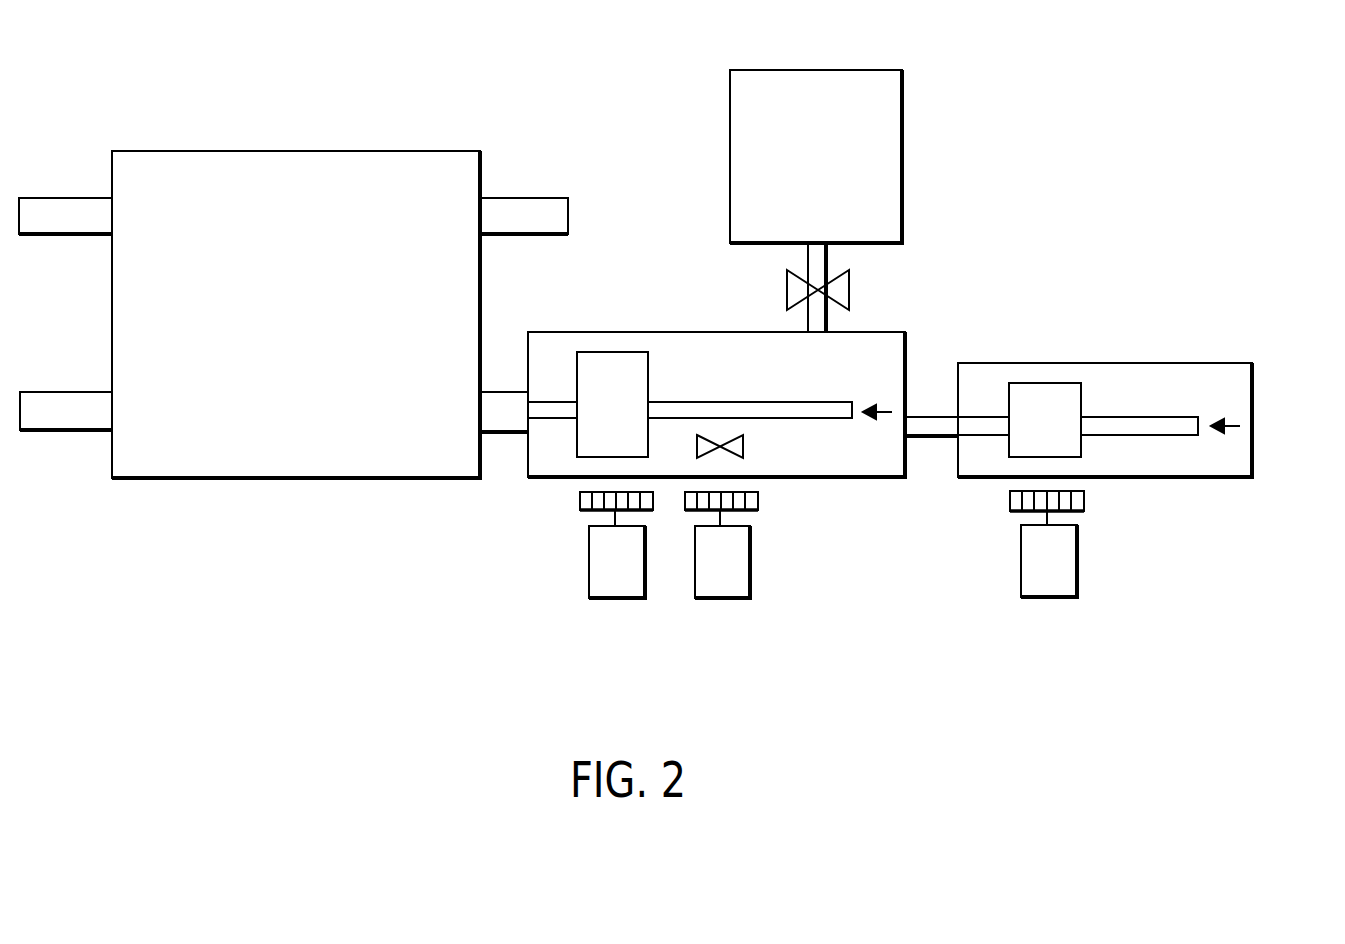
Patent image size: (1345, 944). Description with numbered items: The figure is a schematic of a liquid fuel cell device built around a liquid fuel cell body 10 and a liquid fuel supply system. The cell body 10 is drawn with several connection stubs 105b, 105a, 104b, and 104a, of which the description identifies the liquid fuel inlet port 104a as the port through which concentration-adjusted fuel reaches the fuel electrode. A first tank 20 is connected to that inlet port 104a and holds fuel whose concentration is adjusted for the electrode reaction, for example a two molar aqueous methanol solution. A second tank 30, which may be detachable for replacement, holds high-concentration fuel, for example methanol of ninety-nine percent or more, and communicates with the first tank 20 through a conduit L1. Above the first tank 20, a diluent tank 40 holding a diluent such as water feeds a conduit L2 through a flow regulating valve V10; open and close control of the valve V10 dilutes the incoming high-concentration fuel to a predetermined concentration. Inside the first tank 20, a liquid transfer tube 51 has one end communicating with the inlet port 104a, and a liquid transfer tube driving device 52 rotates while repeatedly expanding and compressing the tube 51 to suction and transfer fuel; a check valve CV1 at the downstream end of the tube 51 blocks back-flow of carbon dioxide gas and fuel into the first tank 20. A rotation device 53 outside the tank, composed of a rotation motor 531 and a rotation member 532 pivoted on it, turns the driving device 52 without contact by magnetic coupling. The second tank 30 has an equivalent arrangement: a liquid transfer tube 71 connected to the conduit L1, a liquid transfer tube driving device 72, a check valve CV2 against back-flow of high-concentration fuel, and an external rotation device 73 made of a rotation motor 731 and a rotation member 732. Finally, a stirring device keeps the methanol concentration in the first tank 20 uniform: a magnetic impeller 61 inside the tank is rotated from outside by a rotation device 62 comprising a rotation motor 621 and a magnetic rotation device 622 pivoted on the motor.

The liquid fuel cell body 10 is at (215, 151).
The gas port 105b is at (62, 197).
The gas port 105a is at (523, 197).
The exhaust port 104b is at (62, 432).
The liquid fuel inlet port 104a is at (503, 434).
The first tank 20 is at (806, 479).
The liquid transfer tube driving device 52 is at (622, 352).
The liquid transfer tube 51 is at (838, 420).
The check valve CV1 is at (567, 410).
The magnetic impeller 61 is at (745, 447).
The conduit L2 is at (806, 259).
The flow regulating valve V10 is at (852, 288).
The diluent tank 40 is at (902, 155).
The conduit L1 is at (932, 438).
The second tank 30 is at (1252, 397).
The liquid transfer tube driving device 72 is at (1047, 383).
The liquid transfer tube 71 is at (1150, 417).
The check valve CV2 is at (995, 426).
The rotation member 532 is at (580, 503).
The rotation motor 531 is at (589, 557).
The rotation device 53 is at (613, 620).
The magnetic rotation device 622 is at (758, 503).
The rotation motor 621 is at (751, 560).
The rotation device 62 is at (720, 620).
The rotation member 732 is at (1085, 500).
The rotation motor 731 is at (1077, 558).
The rotation device 73 is at (1047, 620).